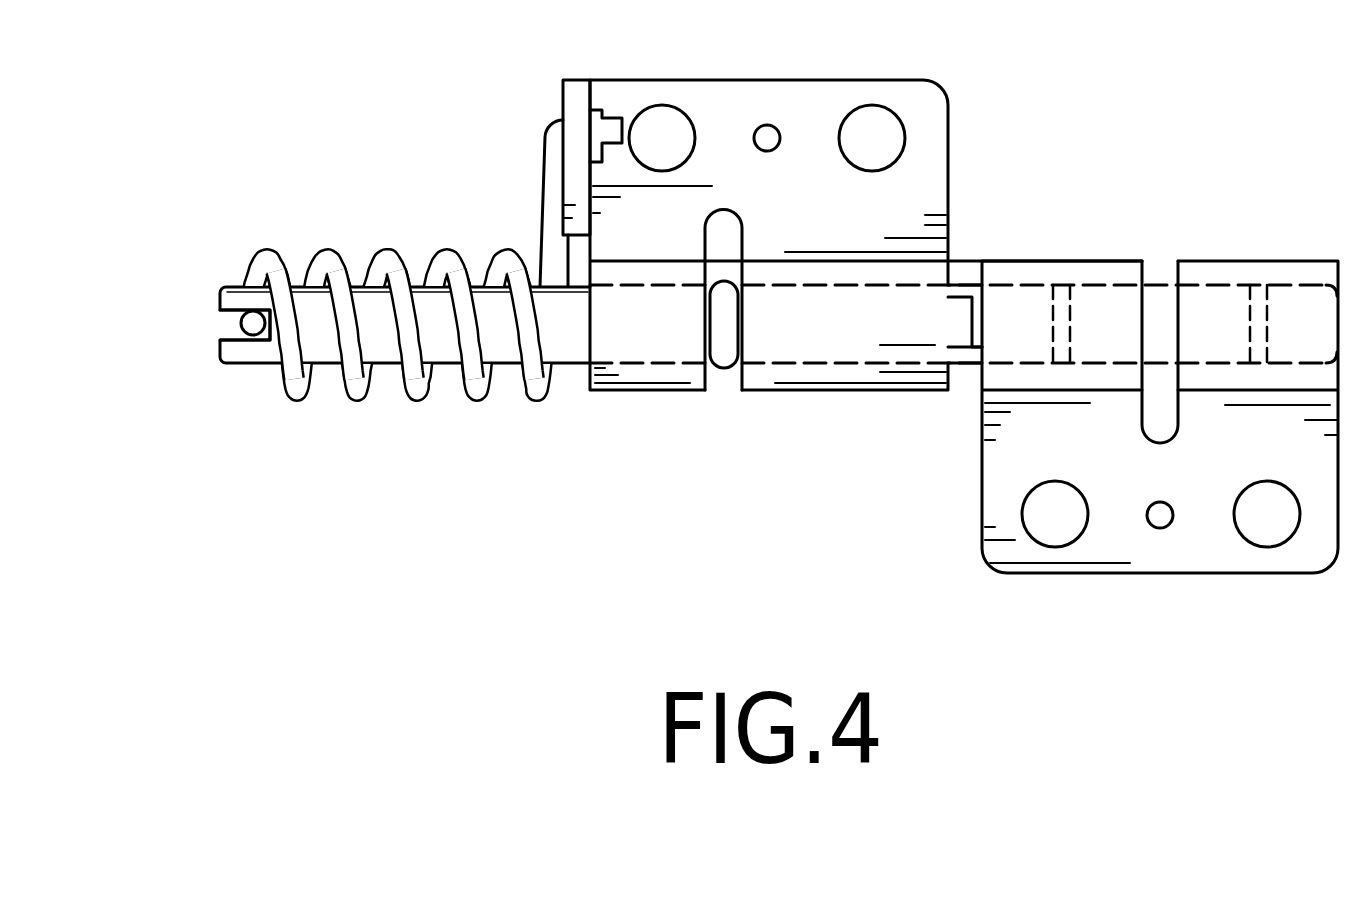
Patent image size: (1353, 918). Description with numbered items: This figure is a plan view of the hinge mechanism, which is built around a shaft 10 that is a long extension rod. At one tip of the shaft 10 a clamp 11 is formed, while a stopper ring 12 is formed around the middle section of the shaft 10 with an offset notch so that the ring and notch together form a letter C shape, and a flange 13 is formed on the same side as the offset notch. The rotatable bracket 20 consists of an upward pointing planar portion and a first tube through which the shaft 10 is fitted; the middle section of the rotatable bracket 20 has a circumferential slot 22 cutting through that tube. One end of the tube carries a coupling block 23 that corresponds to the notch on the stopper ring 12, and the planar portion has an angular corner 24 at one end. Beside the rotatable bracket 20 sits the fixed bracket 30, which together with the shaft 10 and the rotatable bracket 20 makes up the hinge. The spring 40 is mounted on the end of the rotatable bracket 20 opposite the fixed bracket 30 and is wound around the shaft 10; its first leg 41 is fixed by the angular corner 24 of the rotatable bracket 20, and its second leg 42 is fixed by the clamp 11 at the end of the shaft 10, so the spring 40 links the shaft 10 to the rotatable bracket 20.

The shaft 10 is at (563, 343).
The clamp 11 is at (230, 325).
The stopper ring 12 is at (968, 382).
The flange 13 is at (725, 360).
The rotatable bracket 20 is at (800, 92).
The circumferential slot 22 is at (725, 257).
The coupling block 23 is at (953, 310).
The angular corner 24 is at (572, 103).
The fixed bracket 30 is at (1200, 272).
The spring 40 is at (413, 392).
The first leg 41 is at (608, 127).
The second leg 42 is at (253, 322).